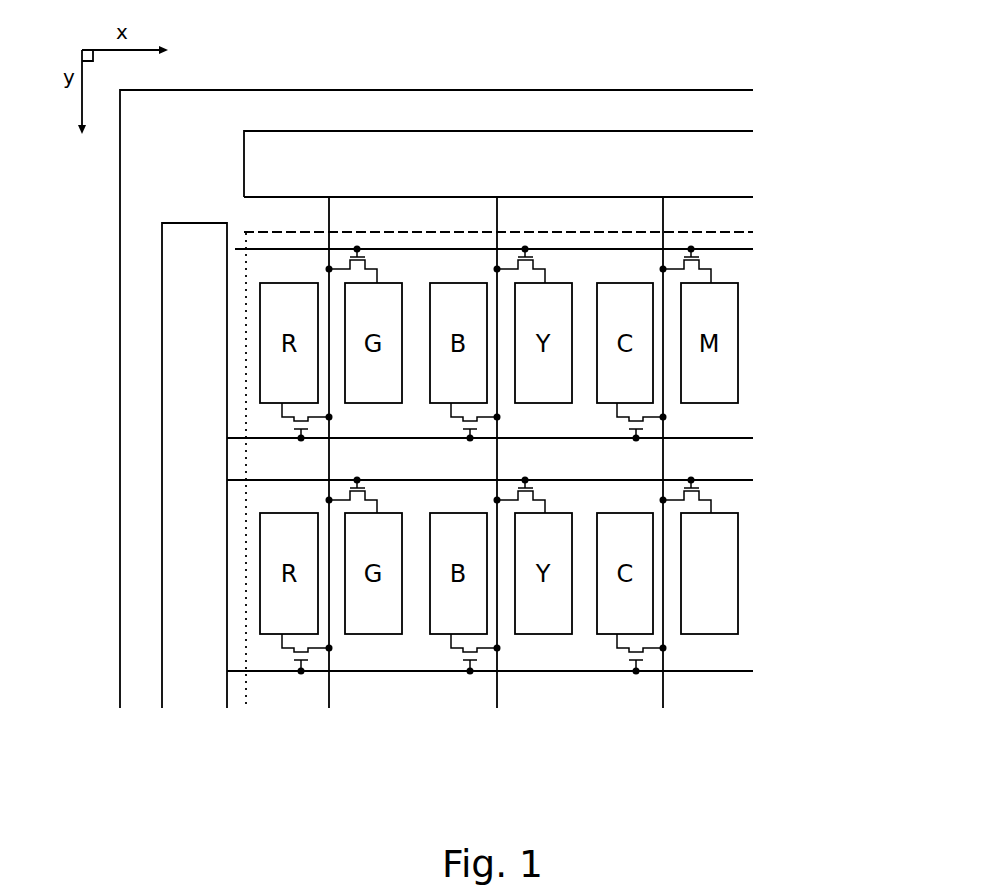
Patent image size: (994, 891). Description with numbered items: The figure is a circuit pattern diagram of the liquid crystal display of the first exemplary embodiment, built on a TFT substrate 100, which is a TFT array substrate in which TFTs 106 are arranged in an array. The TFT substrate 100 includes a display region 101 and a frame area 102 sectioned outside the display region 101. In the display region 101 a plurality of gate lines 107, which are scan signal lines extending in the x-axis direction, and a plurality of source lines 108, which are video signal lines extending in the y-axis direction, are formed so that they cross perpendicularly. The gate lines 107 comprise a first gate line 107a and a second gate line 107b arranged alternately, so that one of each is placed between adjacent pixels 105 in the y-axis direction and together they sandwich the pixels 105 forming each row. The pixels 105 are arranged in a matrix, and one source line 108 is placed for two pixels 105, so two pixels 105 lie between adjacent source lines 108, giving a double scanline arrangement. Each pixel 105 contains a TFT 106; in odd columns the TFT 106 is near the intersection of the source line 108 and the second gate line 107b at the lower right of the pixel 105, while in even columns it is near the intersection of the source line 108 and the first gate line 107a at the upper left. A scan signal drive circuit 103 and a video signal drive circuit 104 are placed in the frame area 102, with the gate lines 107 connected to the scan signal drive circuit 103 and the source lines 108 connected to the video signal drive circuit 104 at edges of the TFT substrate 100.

The TFT substrate 100 is at (693, 88).
The display region 101 is at (248, 686).
The frame area 102 is at (277, 103).
The scan signal drive circuit 103 is at (162, 408).
The video signal drive circuit 104 is at (462, 132).
The pixel 105 is at (772, 566).
The TFT 106 is at (703, 500).
The gate line 107 is at (543, 343).
The first gate line 107a is at (745, 252).
The second gate line 107b is at (745, 438).
The source line 108 is at (663, 221).